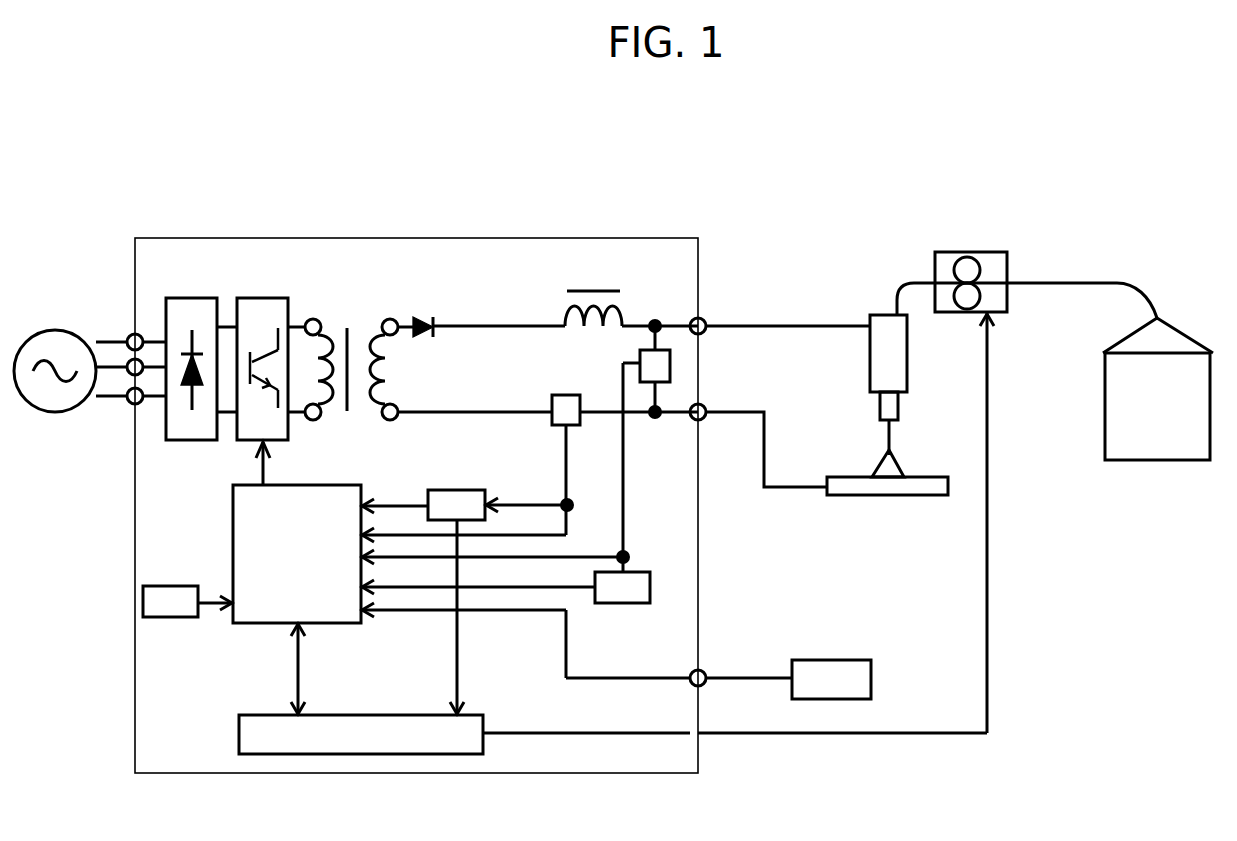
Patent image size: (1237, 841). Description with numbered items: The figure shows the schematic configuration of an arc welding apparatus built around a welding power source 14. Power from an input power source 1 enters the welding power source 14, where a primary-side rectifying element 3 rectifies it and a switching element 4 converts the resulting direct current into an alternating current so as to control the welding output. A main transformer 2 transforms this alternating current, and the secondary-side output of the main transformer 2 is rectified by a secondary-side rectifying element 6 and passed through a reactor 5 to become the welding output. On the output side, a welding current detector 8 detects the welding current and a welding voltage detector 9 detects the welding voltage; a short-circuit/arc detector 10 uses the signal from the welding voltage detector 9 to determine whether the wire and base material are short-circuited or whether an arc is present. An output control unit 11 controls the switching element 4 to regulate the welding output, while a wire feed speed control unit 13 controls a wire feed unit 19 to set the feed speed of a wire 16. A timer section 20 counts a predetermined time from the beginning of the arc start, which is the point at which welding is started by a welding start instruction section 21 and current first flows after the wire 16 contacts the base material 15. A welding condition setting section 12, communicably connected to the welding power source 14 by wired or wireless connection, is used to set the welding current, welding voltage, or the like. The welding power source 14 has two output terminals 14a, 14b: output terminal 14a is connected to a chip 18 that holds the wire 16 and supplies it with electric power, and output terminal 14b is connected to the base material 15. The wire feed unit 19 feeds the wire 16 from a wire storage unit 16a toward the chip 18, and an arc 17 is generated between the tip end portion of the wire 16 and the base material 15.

The input power source 1 is at (42, 330).
The main transformer 2 is at (347, 308).
The primary-side rectifying element 3 is at (180, 297).
The switching element 4 is at (257, 297).
The reactor 5 is at (590, 287).
The secondary-side rectifying element 6 is at (415, 303).
The welding current detector 8 is at (558, 395).
The welding voltage detector 9 is at (662, 350).
The short-circuit/arc detector 10 is at (652, 587).
The output control unit 11 is at (233, 557).
The welding condition setting section 12 is at (835, 700).
The wire feed speed control unit 13 is at (333, 755).
The welding power source 14 is at (135, 637).
The output terminal 14a is at (706, 318).
The output terminal 14b is at (703, 419).
The base material 15 is at (897, 495).
The wire 16 is at (880, 438).
The wire storage unit 16a is at (1157, 461).
The arc 17 is at (877, 468).
The chip 18 is at (868, 362).
The wire feed unit 19 is at (958, 252).
The timer section 20 is at (458, 489).
The welding start instruction section 21 is at (176, 618).